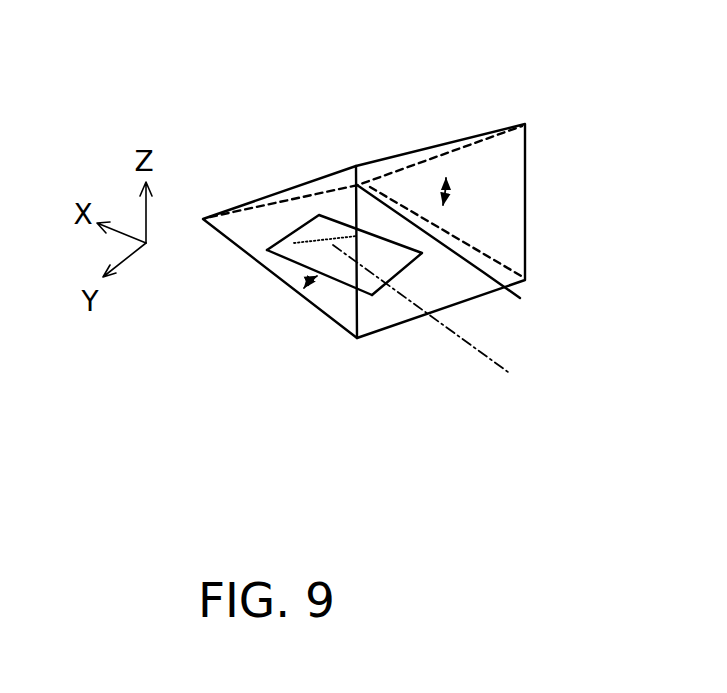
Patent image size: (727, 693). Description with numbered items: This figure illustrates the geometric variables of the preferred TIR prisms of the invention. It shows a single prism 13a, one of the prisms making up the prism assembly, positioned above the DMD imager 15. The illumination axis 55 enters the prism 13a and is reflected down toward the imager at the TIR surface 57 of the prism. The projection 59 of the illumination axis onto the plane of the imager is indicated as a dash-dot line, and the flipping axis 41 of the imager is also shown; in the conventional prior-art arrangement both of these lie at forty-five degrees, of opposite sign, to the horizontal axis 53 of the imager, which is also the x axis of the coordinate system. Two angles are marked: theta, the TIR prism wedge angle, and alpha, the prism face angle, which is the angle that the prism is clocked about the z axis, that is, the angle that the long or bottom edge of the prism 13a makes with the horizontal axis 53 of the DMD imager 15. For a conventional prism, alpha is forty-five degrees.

The prism 13a is at (214, 333).
The DMD imager 15 is at (382, 257).
The flipping axis 41 is at (308, 237).
The horizontal axis 53 is at (340, 284).
The illumination axis 55 is at (477, 270).
The TIR surface 57 is at (338, 248).
The projection of the illumination axis 59 is at (480, 350).